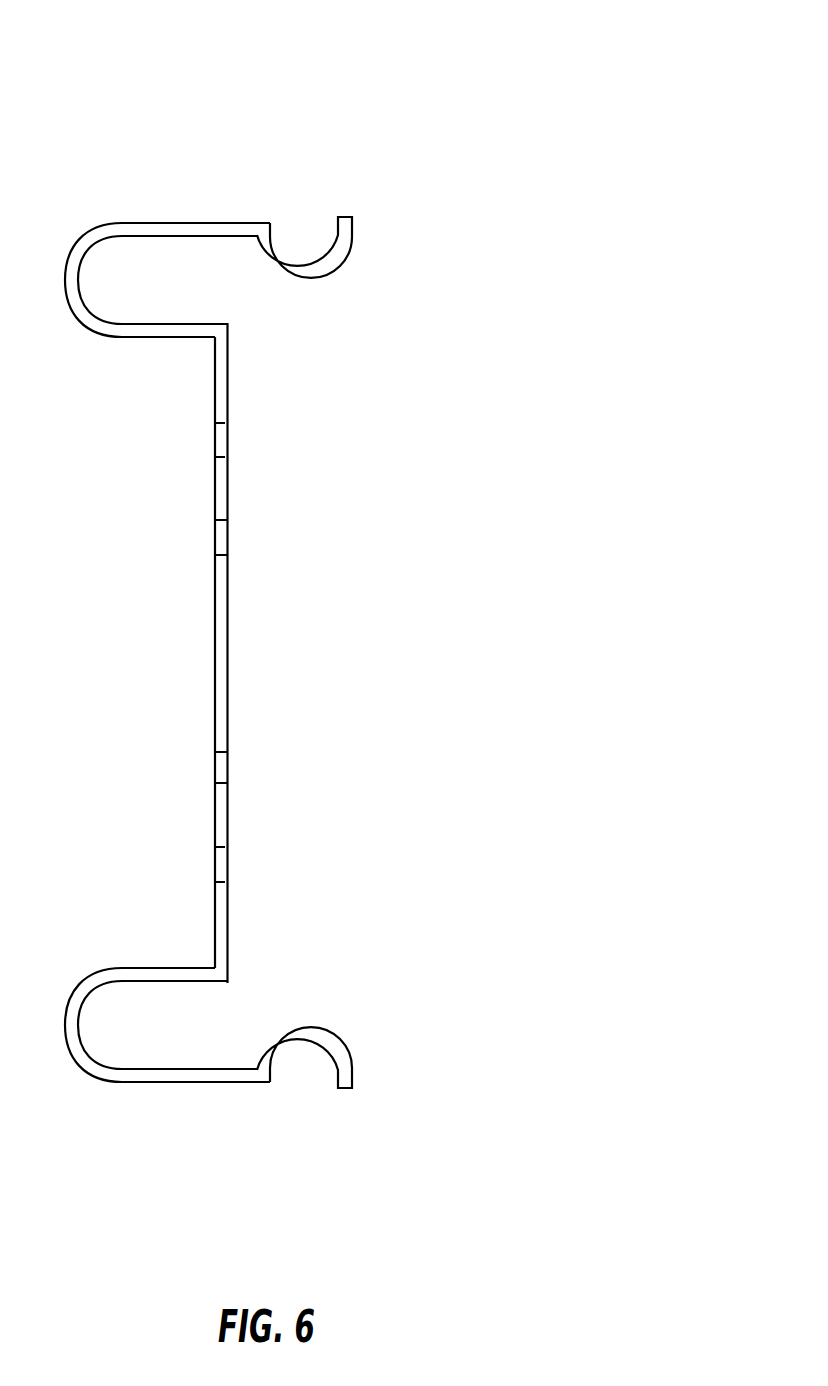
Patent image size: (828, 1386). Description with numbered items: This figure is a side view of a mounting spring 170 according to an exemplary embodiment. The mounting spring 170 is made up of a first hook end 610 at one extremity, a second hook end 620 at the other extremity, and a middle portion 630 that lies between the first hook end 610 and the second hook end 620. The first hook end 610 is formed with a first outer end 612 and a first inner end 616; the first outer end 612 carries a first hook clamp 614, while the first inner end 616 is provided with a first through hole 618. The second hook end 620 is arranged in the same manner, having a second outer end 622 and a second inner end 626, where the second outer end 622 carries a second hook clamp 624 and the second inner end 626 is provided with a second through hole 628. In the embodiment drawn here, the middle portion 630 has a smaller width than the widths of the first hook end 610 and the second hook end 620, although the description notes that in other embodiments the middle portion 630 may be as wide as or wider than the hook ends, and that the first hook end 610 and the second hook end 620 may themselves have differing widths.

The mounting spring 170 is at (560, 76).
The first hook end 610 is at (168, 338).
The first outer end 612 is at (195, 222).
The first hook clamp 614 is at (353, 247).
The first inner end 616 is at (228, 482).
The first through hole 618 is at (222, 443).
The second hook end 620 is at (168, 968).
The second outer end 622 is at (198, 1083).
The second hook clamp 624 is at (353, 1058).
The second inner end 626 is at (228, 822).
The second through hole 628 is at (222, 868).
The middle portion 630 is at (228, 652).